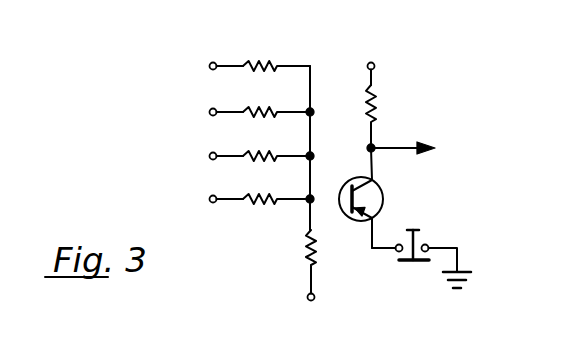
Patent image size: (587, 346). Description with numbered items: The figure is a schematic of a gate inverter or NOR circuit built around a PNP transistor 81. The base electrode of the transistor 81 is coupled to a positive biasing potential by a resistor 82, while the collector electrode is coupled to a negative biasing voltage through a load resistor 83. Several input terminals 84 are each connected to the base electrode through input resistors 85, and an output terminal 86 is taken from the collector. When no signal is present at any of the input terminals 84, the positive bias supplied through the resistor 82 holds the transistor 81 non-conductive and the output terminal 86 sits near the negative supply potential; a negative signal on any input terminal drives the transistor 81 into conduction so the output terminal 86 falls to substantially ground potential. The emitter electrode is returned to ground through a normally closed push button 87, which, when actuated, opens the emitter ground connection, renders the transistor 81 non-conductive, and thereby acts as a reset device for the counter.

The PNP transistor 81 is at (378, 181).
The resistor 82 is at (304, 258).
The load resistor 83 is at (376, 105).
The input terminals 84 is at (211, 69).
The input resistors 85 is at (258, 72).
The output terminal 86 is at (392, 148).
The push button 87 is at (419, 236).